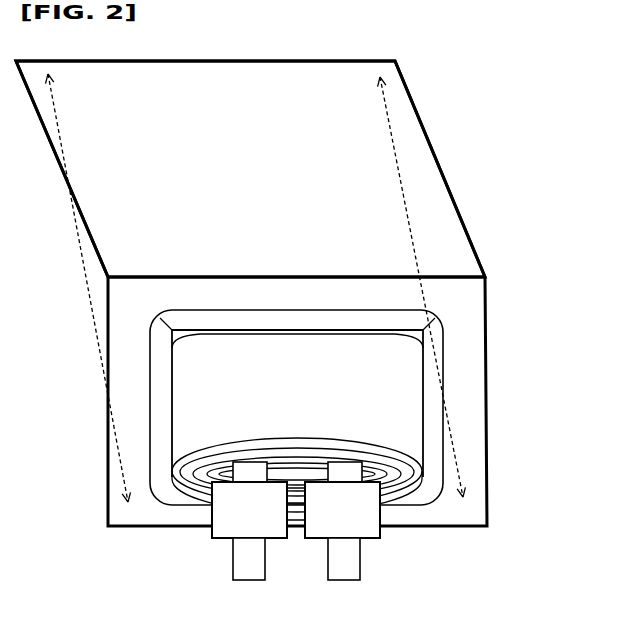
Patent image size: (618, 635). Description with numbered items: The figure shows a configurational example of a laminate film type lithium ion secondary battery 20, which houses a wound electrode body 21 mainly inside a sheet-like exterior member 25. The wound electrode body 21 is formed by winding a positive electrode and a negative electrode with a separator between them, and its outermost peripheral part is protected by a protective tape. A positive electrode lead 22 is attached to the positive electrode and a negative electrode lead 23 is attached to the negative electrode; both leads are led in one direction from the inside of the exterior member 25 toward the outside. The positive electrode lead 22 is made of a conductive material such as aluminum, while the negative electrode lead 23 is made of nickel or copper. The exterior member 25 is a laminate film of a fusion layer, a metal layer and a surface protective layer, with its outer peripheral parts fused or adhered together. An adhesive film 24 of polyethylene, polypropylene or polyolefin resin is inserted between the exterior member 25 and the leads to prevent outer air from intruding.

The laminate film type lithium ion secondary battery 20 is at (442, 68).
The wound electrode body 21 is at (382, 390).
The positive electrode lead 22 is at (245, 563).
The negative electrode lead 23 is at (345, 565).
The adhesive film 24 is at (367, 515).
The exterior member 25 is at (317, 177).